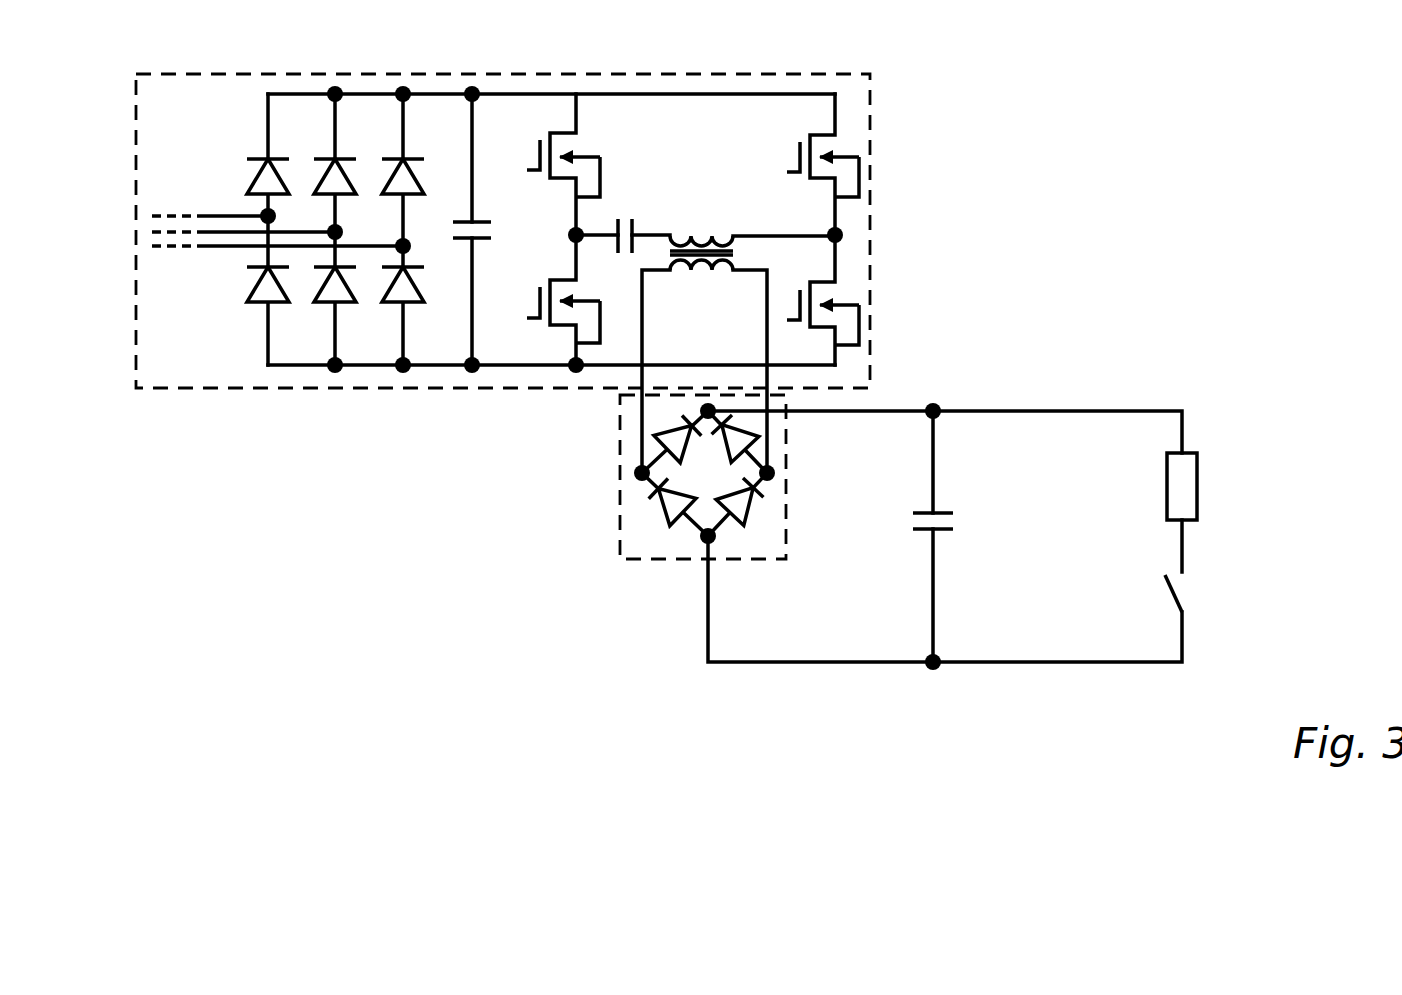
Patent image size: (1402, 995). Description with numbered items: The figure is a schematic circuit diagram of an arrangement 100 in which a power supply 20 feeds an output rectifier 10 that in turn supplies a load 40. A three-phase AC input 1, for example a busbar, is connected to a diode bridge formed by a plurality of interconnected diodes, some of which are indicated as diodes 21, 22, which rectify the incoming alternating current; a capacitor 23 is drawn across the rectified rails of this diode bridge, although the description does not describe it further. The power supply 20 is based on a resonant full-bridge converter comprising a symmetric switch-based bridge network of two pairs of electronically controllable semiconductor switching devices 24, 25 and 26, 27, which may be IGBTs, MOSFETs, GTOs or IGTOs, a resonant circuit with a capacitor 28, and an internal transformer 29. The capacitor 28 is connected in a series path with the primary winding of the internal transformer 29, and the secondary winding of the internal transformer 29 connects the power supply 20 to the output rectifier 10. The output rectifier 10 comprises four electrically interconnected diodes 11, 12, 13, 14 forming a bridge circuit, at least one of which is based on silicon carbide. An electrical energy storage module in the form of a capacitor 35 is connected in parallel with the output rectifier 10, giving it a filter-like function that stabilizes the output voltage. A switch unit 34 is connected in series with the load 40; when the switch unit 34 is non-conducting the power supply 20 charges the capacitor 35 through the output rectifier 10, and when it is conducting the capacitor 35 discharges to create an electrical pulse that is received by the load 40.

The arrangement 100 is at (1105, 118).
The three-phase AC input 1 is at (175, 200).
The power supply 20 is at (232, 390).
The diode 21 is at (253, 147).
The diode 22 is at (237, 290).
The DC link capacitor 23 is at (497, 230).
The semiconductor switching device 24 is at (542, 132).
The semiconductor switching device 25 is at (540, 280).
The semiconductor switching device 26 is at (848, 142).
The semiconductor switching device 27 is at (843, 290).
The capacitor 28 is at (633, 213).
The internal transformer 29 is at (707, 223).
The output rectifier 10 is at (620, 413).
The diode 11 is at (660, 520).
The diode 12 is at (660, 450).
The diode 13 is at (762, 447).
The diode 14 is at (760, 513).
The electrical energy storage module 35 is at (963, 517).
The load 40 is at (1198, 488).
The switch unit 34 is at (1193, 592).